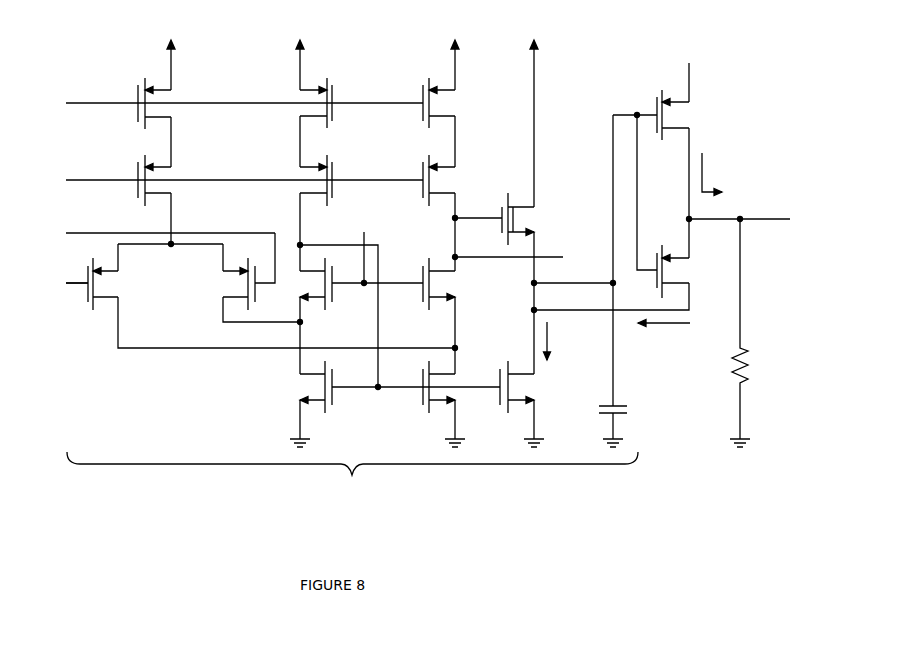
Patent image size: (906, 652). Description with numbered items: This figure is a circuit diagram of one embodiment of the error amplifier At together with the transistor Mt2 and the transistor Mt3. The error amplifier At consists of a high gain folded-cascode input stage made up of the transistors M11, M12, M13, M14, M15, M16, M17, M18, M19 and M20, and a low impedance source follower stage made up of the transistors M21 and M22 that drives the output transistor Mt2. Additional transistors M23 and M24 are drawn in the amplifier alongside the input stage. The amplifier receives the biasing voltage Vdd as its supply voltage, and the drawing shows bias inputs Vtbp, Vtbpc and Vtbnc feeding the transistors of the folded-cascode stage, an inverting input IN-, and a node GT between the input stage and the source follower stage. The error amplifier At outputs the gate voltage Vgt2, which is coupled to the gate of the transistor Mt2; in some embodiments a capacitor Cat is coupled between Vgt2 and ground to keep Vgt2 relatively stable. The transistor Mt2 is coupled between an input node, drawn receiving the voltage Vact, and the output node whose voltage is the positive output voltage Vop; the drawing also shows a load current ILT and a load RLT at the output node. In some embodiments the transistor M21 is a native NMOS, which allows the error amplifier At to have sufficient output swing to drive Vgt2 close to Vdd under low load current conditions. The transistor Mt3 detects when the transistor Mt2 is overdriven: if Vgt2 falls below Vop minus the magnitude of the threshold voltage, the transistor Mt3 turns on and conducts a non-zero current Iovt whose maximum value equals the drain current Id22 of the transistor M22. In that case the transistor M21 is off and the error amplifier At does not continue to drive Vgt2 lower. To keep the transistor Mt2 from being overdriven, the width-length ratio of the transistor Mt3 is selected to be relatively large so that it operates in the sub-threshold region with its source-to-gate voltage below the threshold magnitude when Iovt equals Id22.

The transistor M11 is at (262, 297).
The transistor M12 is at (245, 279).
The transistor M13 is at (293, 404).
The transistor M14 is at (430, 404).
The transistor M15 is at (330, 316).
The transistor M16 is at (432, 316).
The transistor M17 is at (292, 208).
The transistor M18 is at (460, 213).
The transistor M19 is at (292, 103).
The transistor M20 is at (460, 103).
The transistor M21 is at (517, 207).
The transistor M22 is at (540, 404).
The transistor M23 is at (176, 196).
The transistor M24 is at (176, 103).
The transistor Mt2 is at (693, 160).
The transistor Mt3 is at (630, 213).
The capacitor Cat is at (634, 422).
The load resistor RLT is at (756, 333).
The error amplifier At is at (352, 475).
The biasing voltage Vdd is at (303, 12).
The bias voltage Vtbp is at (224, 97).
The bias voltage Vtbpc is at (220, 173).
The bias voltage Vtbnc is at (377, 241).
The inverting input IN- is at (60, 277).
The gate node GT is at (521, 252).
The gate voltage Vgt2 is at (595, 244).
The active supply voltage Vact is at (687, 50).
The positive output voltage Vop is at (739, 200).
The load current ILT is at (715, 173).
The current Iovt is at (664, 334).
The drain current Id22 is at (571, 341).